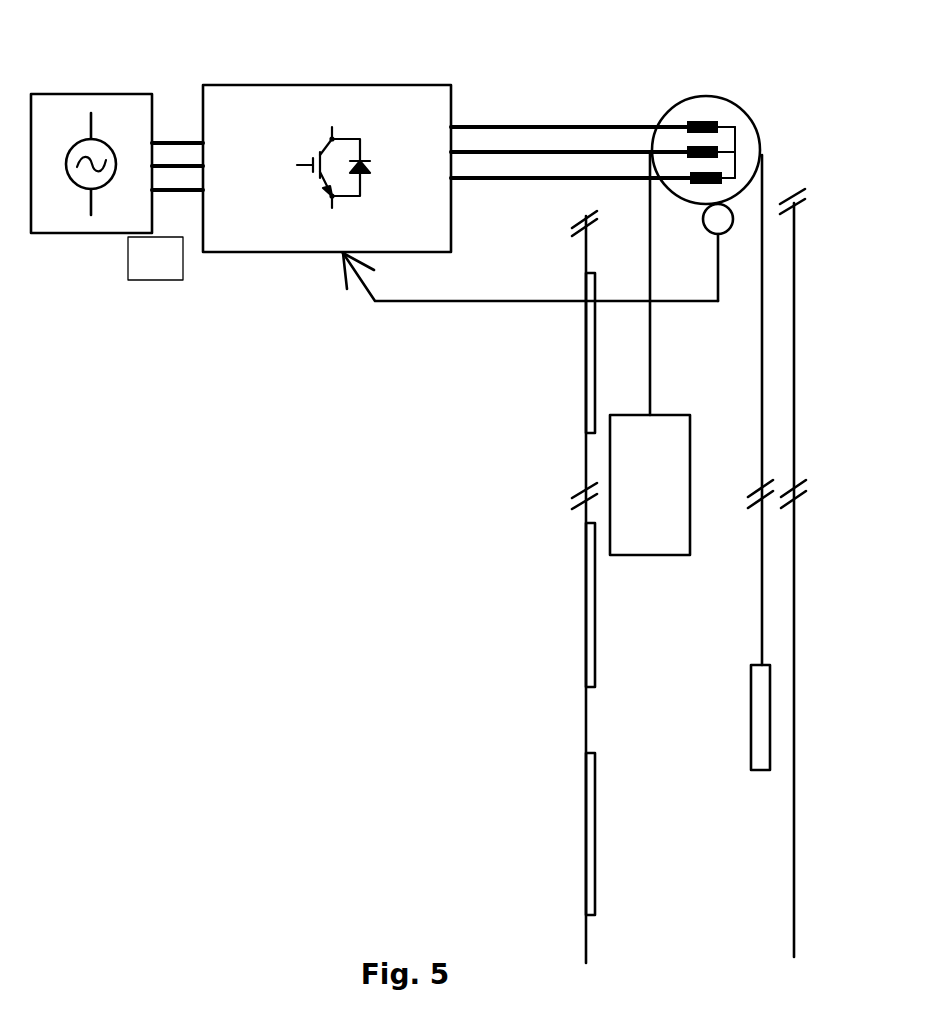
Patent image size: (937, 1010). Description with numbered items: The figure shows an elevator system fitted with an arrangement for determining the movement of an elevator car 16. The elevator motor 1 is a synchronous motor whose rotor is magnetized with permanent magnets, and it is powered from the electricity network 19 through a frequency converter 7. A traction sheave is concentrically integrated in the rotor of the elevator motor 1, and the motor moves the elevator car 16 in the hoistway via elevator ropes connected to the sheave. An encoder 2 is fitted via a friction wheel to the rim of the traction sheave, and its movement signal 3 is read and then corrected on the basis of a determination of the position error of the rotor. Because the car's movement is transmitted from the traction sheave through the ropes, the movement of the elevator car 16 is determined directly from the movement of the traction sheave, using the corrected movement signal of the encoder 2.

The elevator motor 1 is at (743, 111).
The encoder 2 is at (732, 209).
The movement signal 3 is at (453, 301).
The frequency converter 7 is at (318, 85).
The elevator car 16 is at (677, 556).
The electricity network 19 is at (75, 94).